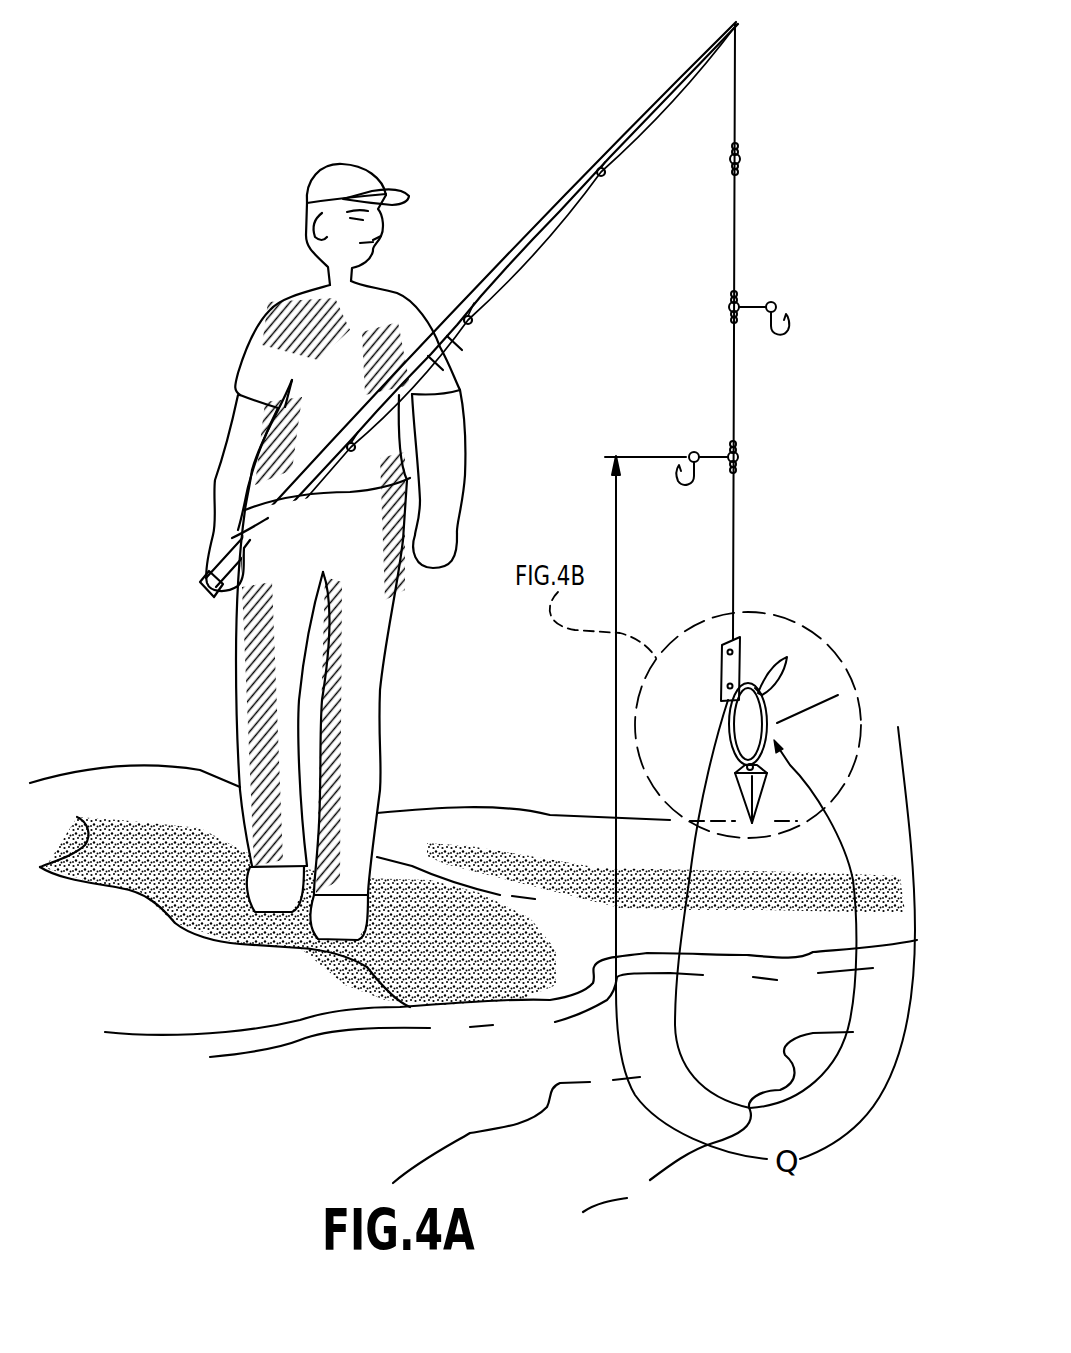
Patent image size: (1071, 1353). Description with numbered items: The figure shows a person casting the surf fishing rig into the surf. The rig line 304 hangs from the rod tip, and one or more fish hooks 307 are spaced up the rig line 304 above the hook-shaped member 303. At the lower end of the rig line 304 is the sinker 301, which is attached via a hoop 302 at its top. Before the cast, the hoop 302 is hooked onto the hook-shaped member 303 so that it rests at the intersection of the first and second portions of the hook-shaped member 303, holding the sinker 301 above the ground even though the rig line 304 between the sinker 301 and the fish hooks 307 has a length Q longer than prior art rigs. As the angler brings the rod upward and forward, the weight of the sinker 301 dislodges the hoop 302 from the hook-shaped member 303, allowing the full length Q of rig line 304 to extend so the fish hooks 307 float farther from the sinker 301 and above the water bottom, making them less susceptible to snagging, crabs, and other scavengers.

The sinker 301 is at (824, 720).
The hoop 302 is at (728, 742).
The hook-shaped member 303 is at (764, 688).
The rig line 304 is at (760, 807).
The fish hooks 307 is at (789, 328).